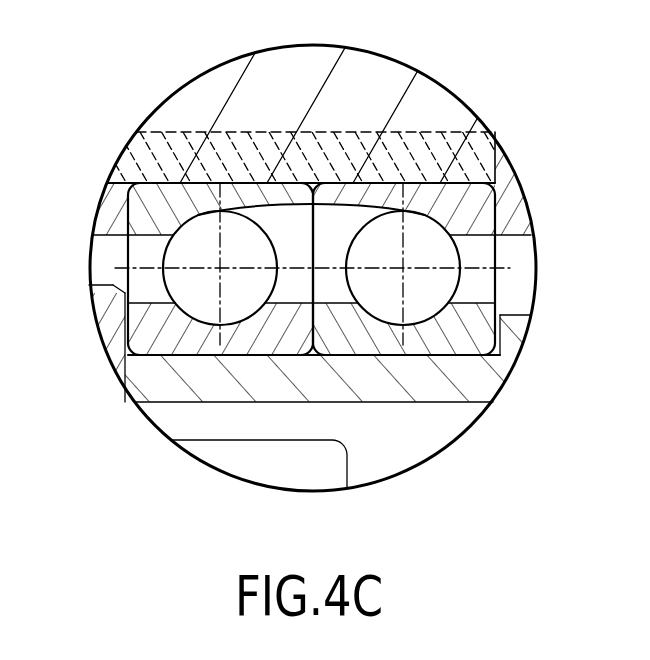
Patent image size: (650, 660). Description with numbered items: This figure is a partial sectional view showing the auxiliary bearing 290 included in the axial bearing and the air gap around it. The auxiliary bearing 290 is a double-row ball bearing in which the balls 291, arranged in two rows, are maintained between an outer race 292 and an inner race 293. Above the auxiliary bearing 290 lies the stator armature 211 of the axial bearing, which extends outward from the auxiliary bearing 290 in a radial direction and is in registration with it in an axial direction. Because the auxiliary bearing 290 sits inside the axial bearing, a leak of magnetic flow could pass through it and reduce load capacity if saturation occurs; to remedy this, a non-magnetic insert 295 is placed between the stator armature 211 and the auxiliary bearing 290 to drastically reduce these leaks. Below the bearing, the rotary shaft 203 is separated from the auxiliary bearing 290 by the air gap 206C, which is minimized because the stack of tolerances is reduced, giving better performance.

The stator armature 211 is at (187, 110).
The non-magnetic insert 295 is at (400, 153).
The outer race 292 is at (343, 193).
The inner race 293 is at (340, 345).
The auxiliary bearing 290 is at (502, 196).
The balls 291 is at (190, 288).
The rotary shaft 203 is at (476, 383).
The air gap 206C is at (400, 362).